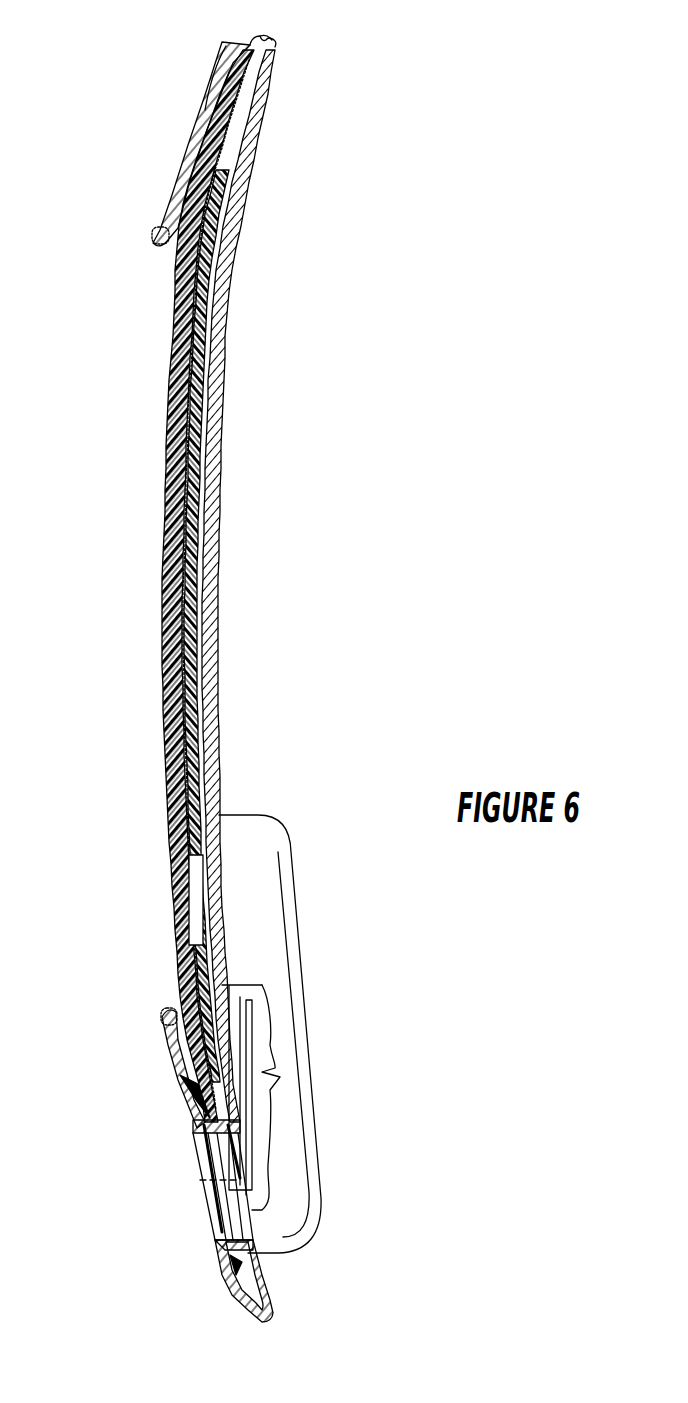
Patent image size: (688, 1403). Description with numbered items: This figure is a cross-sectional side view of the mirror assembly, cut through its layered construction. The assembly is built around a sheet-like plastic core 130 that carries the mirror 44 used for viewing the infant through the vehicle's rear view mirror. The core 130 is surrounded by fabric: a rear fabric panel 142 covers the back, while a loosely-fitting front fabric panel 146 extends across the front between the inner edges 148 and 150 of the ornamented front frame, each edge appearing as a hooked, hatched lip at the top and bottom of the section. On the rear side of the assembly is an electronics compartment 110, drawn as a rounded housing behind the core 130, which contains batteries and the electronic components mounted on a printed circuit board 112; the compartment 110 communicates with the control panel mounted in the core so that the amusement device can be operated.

The mirror 44 is at (165, 767).
The electronics compartment 110 is at (292, 917).
The printed circuit board 112 is at (252, 1128).
The plastic core 130 is at (210, 262).
The rear fabric panel 142 is at (212, 418).
The front fabric panel 146 is at (178, 146).
The inner edge 148 is at (158, 242).
The inner edge 150 is at (167, 1012).